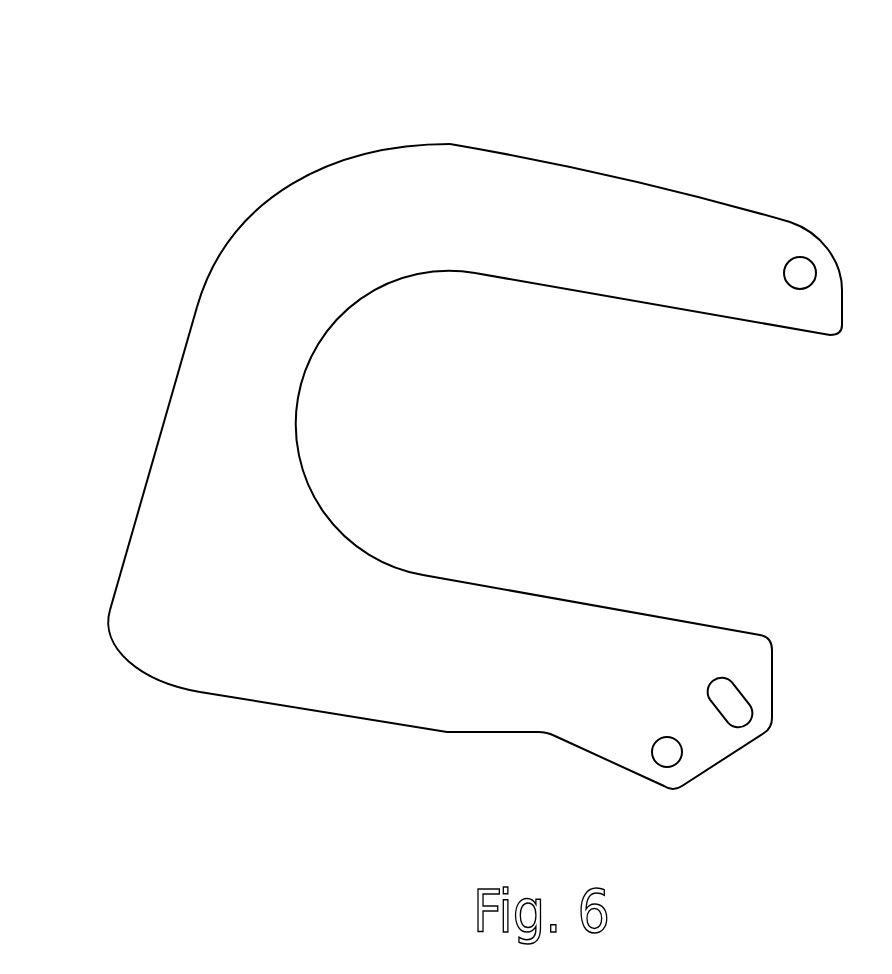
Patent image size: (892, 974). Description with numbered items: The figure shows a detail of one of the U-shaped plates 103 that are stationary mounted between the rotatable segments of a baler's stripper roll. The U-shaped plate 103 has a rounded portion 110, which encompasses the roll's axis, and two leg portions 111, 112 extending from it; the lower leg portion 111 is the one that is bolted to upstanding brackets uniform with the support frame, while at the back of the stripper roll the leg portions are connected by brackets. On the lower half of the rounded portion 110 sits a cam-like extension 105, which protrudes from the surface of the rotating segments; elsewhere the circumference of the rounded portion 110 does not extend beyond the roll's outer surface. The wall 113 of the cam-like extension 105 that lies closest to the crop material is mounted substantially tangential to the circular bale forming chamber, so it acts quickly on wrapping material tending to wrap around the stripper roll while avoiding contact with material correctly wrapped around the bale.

The U-shaped plate 103 is at (660, 158).
The cam-like extension 105 is at (207, 652).
The rounded portion 110 is at (270, 401).
The lower leg portion 111 is at (472, 694).
The leg portion 112 is at (658, 259).
The wall 113 is at (137, 503).